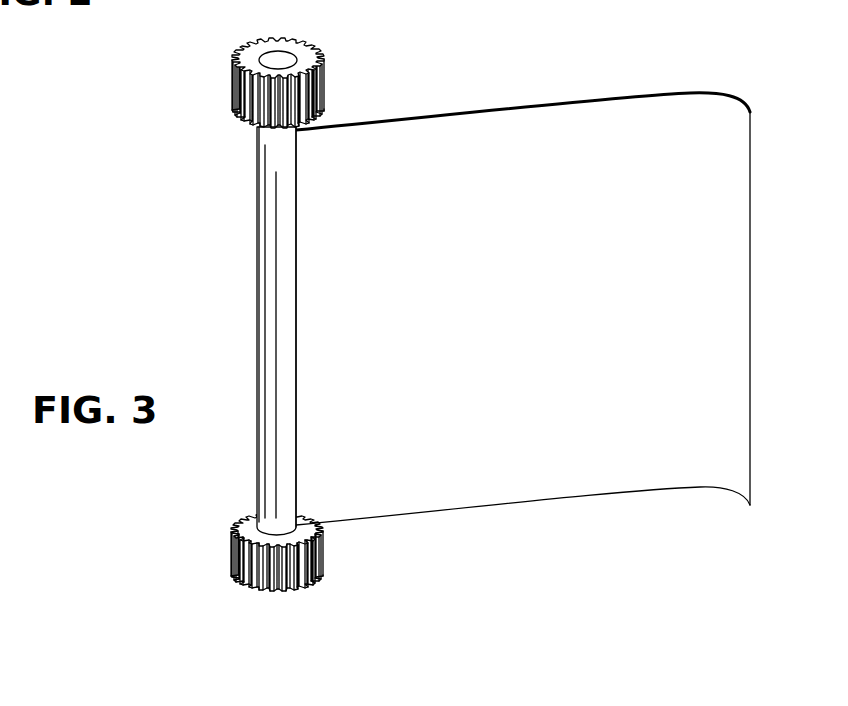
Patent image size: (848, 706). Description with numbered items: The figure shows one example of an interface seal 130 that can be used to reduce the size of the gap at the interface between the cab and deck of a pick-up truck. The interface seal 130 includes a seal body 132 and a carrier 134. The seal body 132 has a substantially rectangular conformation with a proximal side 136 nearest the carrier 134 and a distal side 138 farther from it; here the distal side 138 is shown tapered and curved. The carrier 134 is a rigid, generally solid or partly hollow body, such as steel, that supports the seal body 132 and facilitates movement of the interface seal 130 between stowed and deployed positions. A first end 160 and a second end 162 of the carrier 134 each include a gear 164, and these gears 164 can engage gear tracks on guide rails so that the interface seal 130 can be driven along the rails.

The interface seal 130 is at (546, 295).
The seal body 132 is at (523, 488).
The carrier 134 is at (269, 331).
The proximal side 136 is at (296, 415).
The distal side 138 is at (750, 263).
The first end 160 is at (260, 30).
The second end 162 is at (273, 598).
The gear 164 is at (232, 94).